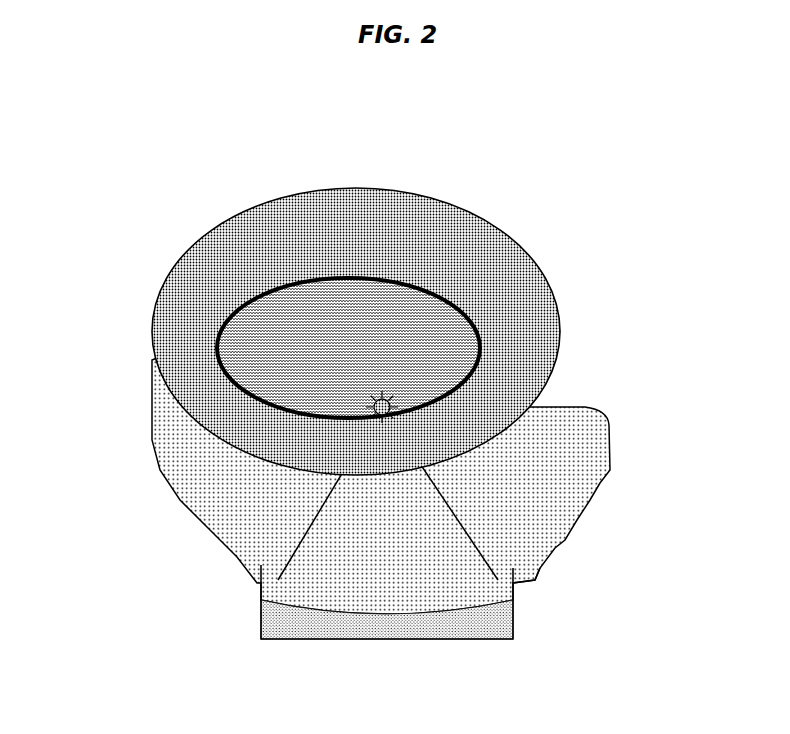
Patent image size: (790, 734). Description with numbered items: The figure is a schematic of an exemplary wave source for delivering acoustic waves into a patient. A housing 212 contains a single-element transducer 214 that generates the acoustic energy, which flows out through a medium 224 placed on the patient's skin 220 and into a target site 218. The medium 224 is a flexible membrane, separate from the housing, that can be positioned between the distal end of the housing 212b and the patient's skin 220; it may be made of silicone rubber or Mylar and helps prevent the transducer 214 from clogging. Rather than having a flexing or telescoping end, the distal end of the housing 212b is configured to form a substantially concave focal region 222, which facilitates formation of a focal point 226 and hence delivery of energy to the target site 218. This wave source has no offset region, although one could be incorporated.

The housing 212 is at (262, 627).
The distal end of the housing 212b is at (522, 580).
The single-element transducer 214 is at (455, 627).
The target site 218 is at (480, 352).
The patient's skin 220 is at (225, 447).
The concave focal region 222 is at (287, 592).
The medium 224 is at (517, 488).
The focal point 226 is at (392, 404).